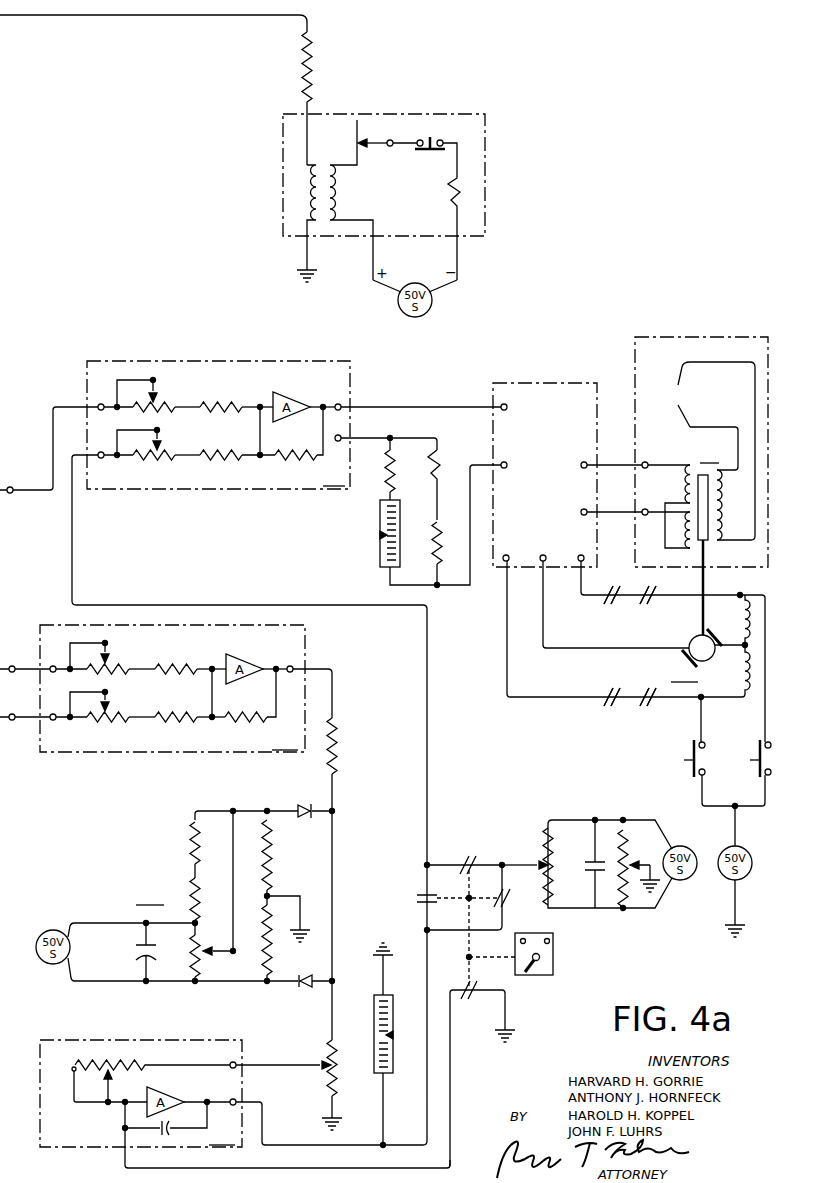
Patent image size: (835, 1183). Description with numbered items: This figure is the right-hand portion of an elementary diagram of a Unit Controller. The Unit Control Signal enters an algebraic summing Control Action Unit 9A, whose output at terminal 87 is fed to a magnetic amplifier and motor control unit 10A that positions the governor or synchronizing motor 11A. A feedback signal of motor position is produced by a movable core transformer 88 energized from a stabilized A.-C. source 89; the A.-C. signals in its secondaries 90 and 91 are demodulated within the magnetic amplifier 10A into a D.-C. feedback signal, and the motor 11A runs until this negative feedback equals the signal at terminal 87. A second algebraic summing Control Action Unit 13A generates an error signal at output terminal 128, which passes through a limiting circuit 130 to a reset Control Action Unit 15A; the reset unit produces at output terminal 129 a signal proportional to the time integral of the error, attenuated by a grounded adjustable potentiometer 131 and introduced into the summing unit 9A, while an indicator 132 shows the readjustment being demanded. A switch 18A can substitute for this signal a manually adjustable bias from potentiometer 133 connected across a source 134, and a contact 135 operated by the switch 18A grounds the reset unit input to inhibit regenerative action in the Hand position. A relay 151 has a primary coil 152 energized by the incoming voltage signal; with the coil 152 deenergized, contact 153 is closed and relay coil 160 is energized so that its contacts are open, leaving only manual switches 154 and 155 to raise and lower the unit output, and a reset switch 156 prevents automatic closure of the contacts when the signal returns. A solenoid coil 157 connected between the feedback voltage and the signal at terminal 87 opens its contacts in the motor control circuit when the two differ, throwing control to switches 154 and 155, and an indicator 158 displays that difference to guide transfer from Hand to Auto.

The relay 151 is at (470, 114).
The primary coil 152 is at (300, 188).
The contact 153 is at (375, 140).
The reset switch 156 is at (430, 135).
The relay coil 160 is at (462, 190).
The output terminal 87 is at (338, 404).
The algebraic summing Control Action Unit 9A is at (213, 753).
The solenoid coil 157 is at (432, 481).
The indicator 158 is at (380, 500).
The magnetic amplifier and motor control unit 10A is at (494, 393).
The movable core transformer 88 is at (701, 486).
The source of A.-C. current 89 is at (681, 395).
The secondary 90 is at (682, 488).
The secondary 91 is at (678, 530).
The synchronizing motor 11A is at (636, 651).
The manually operated switch 154 is at (760, 752).
The manually operated switch 155 is at (688, 763).
The output terminal 128 is at (290, 665).
The algebraic summing Control Action Unit 13A is at (152, 688).
The potentiometer 133 is at (540, 845).
The source 134 is at (690, 878).
The switch 18A is at (548, 960).
The contact 135 is at (470, 1003).
The limiting circuit 130 is at (186, 879).
The grounded adjustable potentiometer 131 is at (325, 1058).
The indicator 132 is at (372, 1003).
The output terminal 129 is at (232, 1098).
The reset Control Action Unit 15A is at (245, 1104).